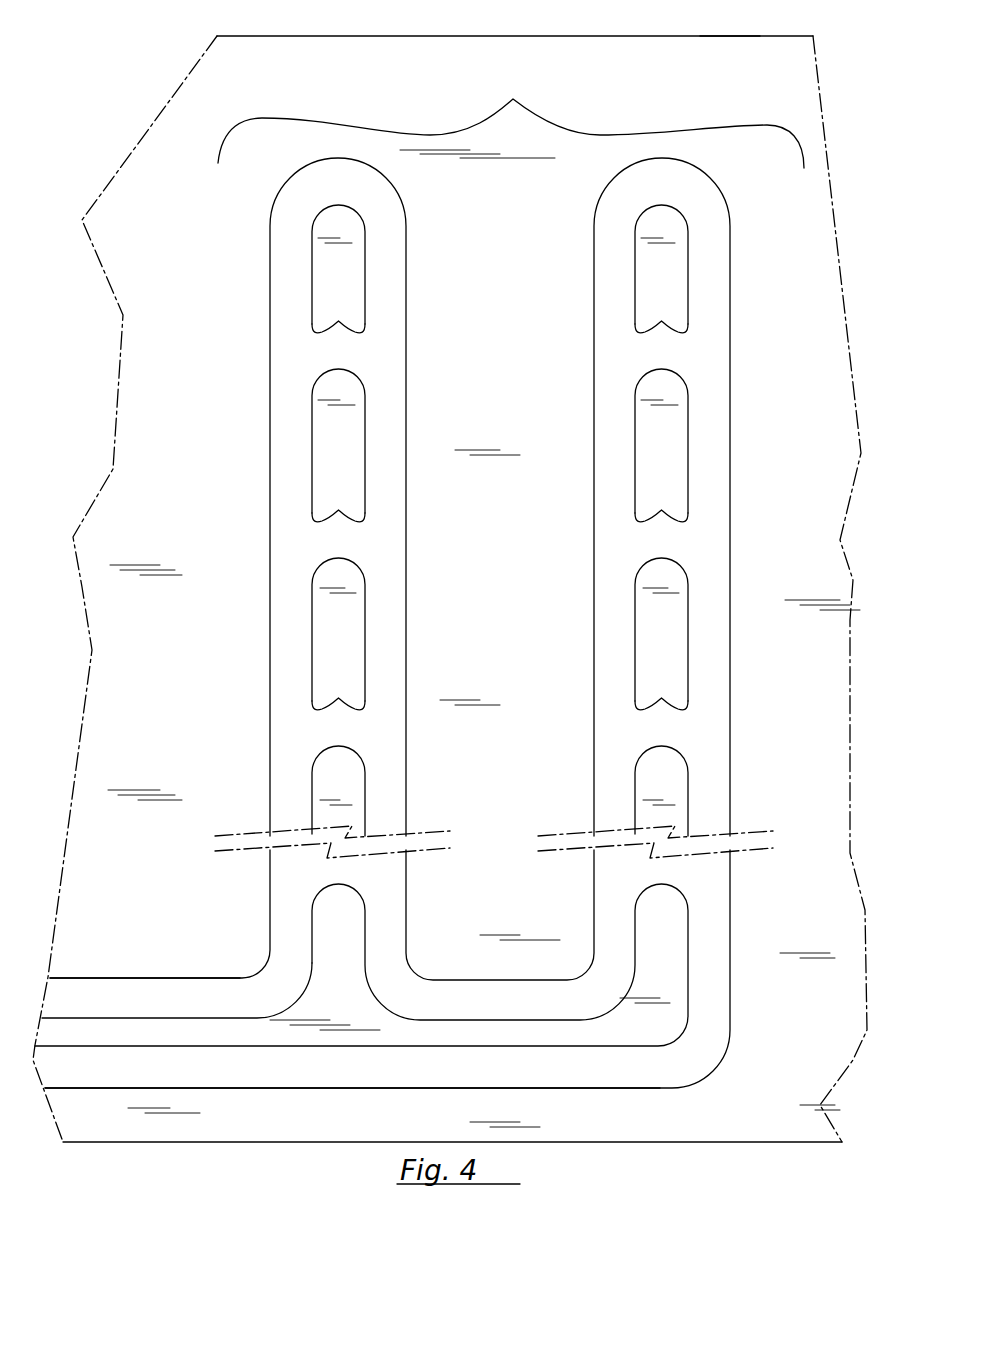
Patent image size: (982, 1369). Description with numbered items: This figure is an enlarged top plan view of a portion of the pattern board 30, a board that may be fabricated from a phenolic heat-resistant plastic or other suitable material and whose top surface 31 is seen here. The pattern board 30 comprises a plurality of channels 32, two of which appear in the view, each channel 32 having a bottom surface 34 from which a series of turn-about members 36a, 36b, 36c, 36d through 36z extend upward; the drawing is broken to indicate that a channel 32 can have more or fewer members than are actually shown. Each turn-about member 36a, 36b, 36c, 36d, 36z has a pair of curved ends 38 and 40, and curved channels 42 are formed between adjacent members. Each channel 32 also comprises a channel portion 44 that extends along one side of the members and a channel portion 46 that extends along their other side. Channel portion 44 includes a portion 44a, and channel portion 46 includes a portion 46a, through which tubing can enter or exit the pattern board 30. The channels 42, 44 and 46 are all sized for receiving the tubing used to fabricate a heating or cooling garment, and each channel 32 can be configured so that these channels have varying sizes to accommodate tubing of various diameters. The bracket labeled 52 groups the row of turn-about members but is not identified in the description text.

The pattern board 30 is at (297, 36).
The top surface 31 is at (728, 57).
The channel 32 is at (270, 416).
The bottom surface 34 is at (372, 366).
The turn-about member 36a is at (366, 258).
The turn-about member 36b is at (366, 438).
The turn-about member 36c is at (366, 632).
The turn-about member 36d is at (366, 785).
The turn-about member 36z is at (365, 936).
The curved end 38 is at (335, 328).
The curved end 40 is at (327, 210).
The curved channel 42 is at (352, 352).
The channel portion 44 is at (283, 470).
The portion 44a is at (152, 990).
The channel portion 46 is at (390, 490).
The portion 46a is at (252, 1082).
The array of segments 52 is at (511, 113).